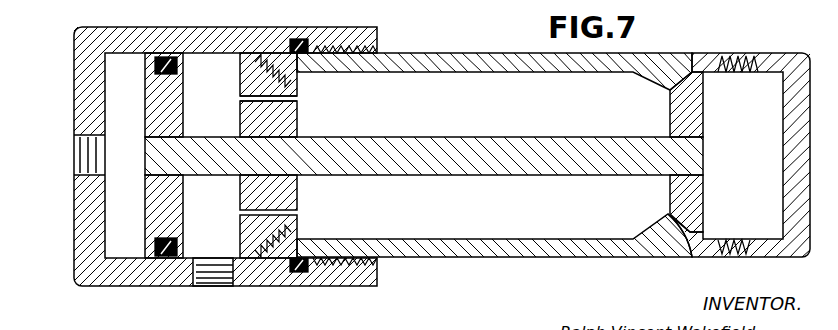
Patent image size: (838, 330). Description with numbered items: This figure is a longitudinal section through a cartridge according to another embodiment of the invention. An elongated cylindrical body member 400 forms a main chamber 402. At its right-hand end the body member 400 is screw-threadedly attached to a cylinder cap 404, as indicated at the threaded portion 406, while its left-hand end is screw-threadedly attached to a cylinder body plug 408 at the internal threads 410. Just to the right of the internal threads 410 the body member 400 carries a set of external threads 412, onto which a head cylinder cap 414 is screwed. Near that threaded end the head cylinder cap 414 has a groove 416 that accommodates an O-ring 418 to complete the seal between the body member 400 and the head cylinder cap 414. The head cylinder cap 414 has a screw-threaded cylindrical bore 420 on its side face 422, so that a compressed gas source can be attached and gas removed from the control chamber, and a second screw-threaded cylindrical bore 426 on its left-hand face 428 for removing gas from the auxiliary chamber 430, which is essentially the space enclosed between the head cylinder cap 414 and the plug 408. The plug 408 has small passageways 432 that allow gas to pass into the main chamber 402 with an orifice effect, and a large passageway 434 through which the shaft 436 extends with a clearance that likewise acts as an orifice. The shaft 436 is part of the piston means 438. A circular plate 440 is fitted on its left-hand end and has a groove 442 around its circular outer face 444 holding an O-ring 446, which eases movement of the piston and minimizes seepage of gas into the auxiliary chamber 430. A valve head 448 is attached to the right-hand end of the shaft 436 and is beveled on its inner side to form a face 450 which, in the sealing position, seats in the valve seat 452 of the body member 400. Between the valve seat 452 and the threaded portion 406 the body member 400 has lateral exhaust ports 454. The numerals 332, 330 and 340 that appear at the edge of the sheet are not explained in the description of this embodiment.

The elongated cylindrical body member 400 is at (518, 52).
The main chamber 402 is at (453, 121).
The cylinder cap 404 is at (789, 57).
The screw threaded portion 406 is at (741, 58).
The cylinder body plug 408 is at (303, 102).
The internal threads 410 is at (301, 90).
The external threads 412 is at (377, 28).
The head cylinder cap 414 is at (95, 27).
The groove 416 is at (308, 44).
The O-ring 418 is at (302, 40).
The cylindrical bore 420 is at (200, 282).
The face 422 is at (112, 288).
The cylindrical bore 426 is at (80, 158).
The face 428 is at (74, 248).
The auxiliary chamber 430 is at (127, 113).
The passageways 432 is at (300, 212).
The large passageway 434 is at (298, 125).
The shaft 436 is at (445, 167).
The piston means 438 is at (222, 175).
The circular plate 440 is at (209, 114).
The groove 442 is at (141, 77).
The circular outer face 444 is at (206, 62).
The O-ring 446 is at (163, 56).
The valve head 448 is at (704, 104).
The face 450 is at (683, 92).
The valve seat 452 is at (657, 255).
The lateral exhaust ports 454 is at (697, 257).
The element 332 is at (398, 5).
The element 330 is at (453, 5).
The element 340 is at (538, 4).